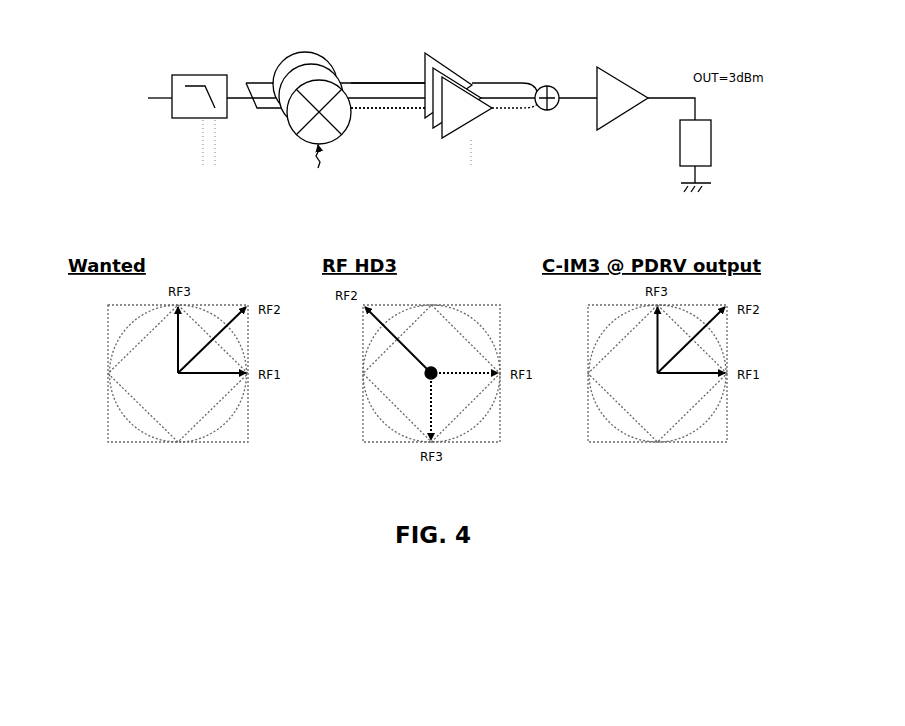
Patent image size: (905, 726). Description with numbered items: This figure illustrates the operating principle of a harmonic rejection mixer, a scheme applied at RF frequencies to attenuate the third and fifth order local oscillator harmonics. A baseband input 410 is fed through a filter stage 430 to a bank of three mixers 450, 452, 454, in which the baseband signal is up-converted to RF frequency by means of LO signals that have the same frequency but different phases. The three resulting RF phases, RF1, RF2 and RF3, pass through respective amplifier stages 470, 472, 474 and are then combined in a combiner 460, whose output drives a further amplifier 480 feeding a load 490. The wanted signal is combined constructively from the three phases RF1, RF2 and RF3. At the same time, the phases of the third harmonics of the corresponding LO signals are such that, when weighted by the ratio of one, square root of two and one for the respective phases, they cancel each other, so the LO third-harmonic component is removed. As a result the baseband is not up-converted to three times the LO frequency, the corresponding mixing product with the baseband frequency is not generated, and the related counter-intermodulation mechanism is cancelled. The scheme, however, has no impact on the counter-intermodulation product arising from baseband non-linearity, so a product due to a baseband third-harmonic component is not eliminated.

The baseband I/Q input signal 410 is at (93, 80).
The low-pass filter 430 is at (203, 74).
The mixer 450 is at (318, 55).
The mixer 452 is at (337, 80).
The mixer 454 is at (340, 135).
The combiner 460 is at (553, 88).
The amplifier 470 is at (445, 65).
The amplifier 472 is at (472, 87).
The amplifier 474 is at (460, 130).
The pre-driver amplifier 480 is at (622, 80).
The load 490 is at (712, 148).